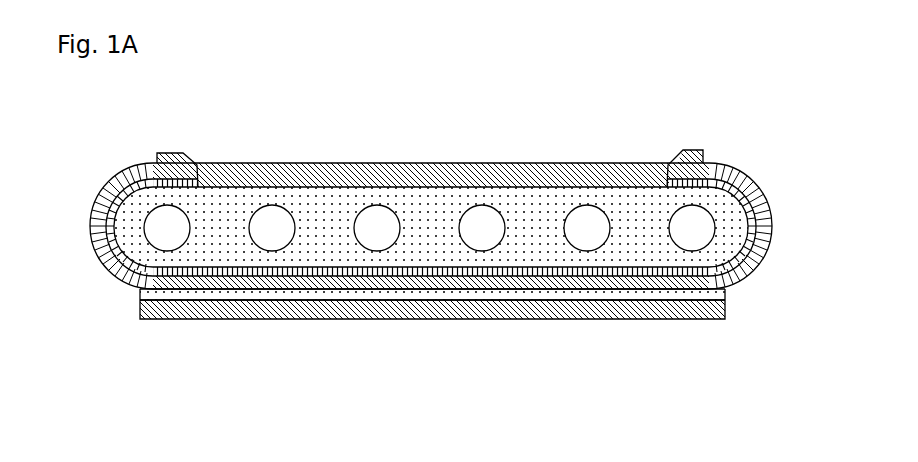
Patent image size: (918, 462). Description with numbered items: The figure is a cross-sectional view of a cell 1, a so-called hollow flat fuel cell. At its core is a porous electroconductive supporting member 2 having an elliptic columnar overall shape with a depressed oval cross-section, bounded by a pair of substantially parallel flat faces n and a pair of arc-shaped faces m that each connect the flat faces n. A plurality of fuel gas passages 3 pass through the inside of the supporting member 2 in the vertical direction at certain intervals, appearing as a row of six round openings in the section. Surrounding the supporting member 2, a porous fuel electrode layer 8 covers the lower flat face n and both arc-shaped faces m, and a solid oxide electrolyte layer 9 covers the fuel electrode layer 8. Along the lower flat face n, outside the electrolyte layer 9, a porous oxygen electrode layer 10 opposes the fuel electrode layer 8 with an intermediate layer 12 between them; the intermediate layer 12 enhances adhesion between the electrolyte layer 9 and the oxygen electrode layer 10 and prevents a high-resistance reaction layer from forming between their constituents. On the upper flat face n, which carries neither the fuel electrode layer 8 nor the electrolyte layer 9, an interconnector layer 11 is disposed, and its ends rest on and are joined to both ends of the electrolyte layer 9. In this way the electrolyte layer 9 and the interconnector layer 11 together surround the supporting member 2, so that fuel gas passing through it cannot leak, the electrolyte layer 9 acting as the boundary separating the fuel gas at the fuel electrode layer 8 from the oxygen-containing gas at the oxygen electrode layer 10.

The cell 1 is at (745, 172).
The porous electroconductive supporting member 2 is at (322, 245).
The fuel gas passages 3 is at (363, 227).
The fuel electrode layer 8 is at (745, 278).
The solid oxide electrolyte layer 9 is at (615, 280).
The oxygen electrode layer 10 is at (588, 307).
The interconnector layer 11 is at (370, 173).
The intermediate layer 12 is at (453, 293).
The flat faces n is at (530, 188).
The arc-shaped faces m is at (110, 236).